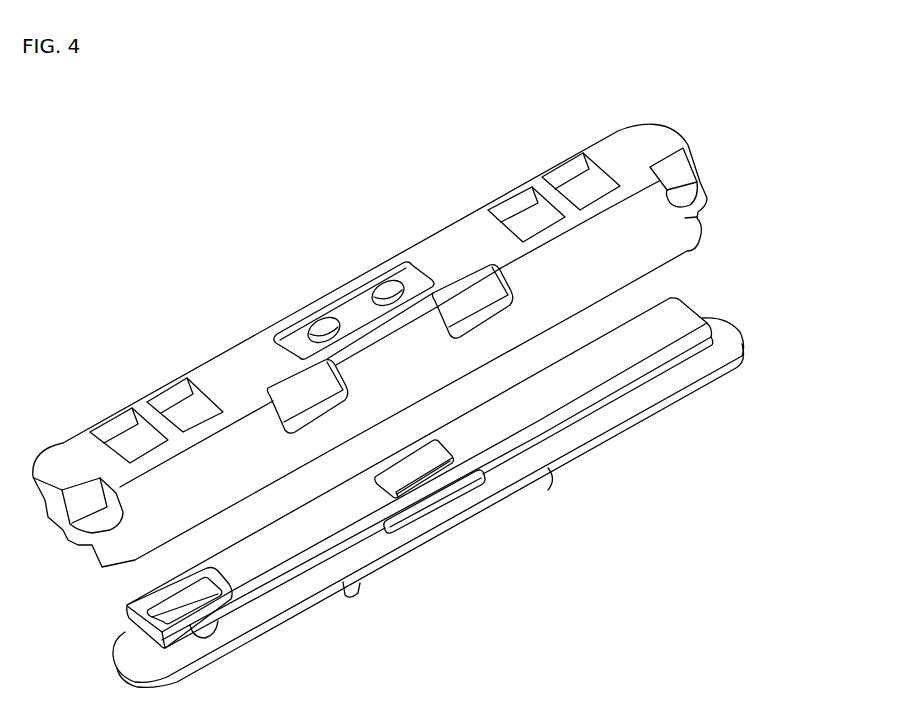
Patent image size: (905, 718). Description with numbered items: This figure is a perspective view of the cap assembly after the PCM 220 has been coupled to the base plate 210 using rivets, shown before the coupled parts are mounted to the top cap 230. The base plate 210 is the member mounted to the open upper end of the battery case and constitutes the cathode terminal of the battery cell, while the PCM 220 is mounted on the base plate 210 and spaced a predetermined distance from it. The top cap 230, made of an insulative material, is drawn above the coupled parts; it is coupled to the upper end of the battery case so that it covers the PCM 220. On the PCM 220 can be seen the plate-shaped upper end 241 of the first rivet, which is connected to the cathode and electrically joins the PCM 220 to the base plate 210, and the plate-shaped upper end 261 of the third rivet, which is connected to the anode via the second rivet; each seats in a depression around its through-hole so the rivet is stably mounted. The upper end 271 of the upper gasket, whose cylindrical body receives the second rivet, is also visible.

The base plate 210 is at (737, 322).
The PCM 220 is at (687, 305).
The top cap 230 is at (693, 167).
The plate-shaped upper end 241 is at (178, 590).
The plate-shaped upper end 261 is at (428, 455).
The upper end 271 is at (458, 493).